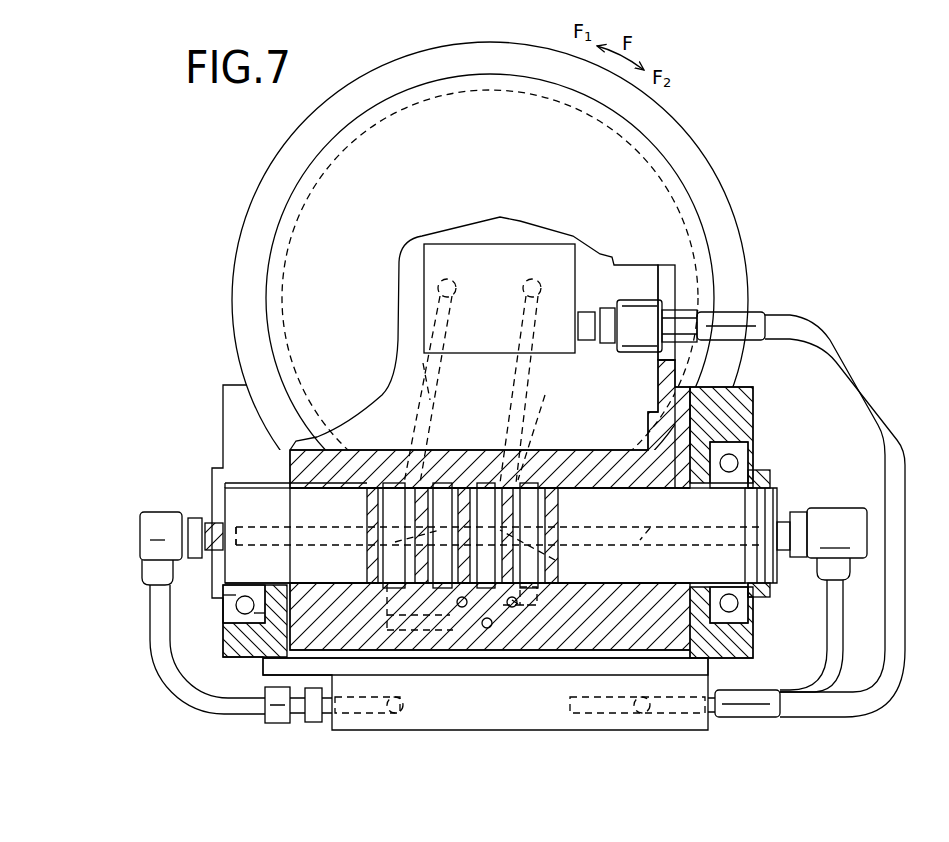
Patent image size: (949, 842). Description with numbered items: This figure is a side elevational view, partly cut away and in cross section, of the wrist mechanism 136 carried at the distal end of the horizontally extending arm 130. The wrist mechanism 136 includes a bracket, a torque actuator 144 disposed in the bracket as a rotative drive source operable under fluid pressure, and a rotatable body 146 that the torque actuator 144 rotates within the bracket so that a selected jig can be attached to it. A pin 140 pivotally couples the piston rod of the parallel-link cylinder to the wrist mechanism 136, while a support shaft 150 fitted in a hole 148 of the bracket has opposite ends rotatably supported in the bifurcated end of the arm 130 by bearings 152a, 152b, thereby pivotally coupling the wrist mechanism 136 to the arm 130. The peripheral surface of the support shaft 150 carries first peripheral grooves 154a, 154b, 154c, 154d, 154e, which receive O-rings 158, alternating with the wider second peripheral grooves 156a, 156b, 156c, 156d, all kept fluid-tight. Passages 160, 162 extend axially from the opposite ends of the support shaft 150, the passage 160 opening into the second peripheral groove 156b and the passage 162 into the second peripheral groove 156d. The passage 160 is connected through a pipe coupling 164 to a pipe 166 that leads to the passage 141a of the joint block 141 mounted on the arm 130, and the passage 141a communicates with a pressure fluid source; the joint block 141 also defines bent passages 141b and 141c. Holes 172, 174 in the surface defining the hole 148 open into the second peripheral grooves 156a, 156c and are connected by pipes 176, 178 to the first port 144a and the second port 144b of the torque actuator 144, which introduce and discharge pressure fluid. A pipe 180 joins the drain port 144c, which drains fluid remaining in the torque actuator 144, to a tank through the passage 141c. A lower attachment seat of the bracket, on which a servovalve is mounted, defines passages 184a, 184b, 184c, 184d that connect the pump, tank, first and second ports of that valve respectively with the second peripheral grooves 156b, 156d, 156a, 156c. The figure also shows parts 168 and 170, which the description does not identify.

The arm 130 is at (262, 670).
The wrist mechanism 136 is at (710, 108).
The pin 140 is at (232, 405).
The joint block 141 is at (340, 724).
The passage 141a is at (367, 713).
The passage 141b is at (650, 715).
The passage 141c is at (647, 716).
The torque actuator 144 is at (668, 187).
The first port 144a is at (444, 266).
The second port 144b is at (528, 266).
The drain port 144c is at (580, 328).
The rotatable body 146 is at (663, 161).
The hole 148 is at (228, 483).
The support shaft 150 is at (235, 522).
The bearing 152a is at (227, 603).
The bearing 152b is at (738, 620).
The first peripheral groove 154a is at (375, 518).
The first peripheral groove 154b is at (420, 587).
The first peripheral groove 154c is at (468, 483).
The first peripheral groove 154d is at (540, 483).
The first peripheral groove 154e is at (621, 516).
The second peripheral groove 156a is at (393, 483).
The second peripheral groove 156b is at (443, 483).
The second peripheral groove 156c is at (488, 483).
The second peripheral groove 156d is at (552, 485).
The O-ring 158 is at (360, 452).
The passage 160 is at (283, 537).
The passage 162 is at (696, 516).
The pipe coupling 164 is at (150, 531).
The pipe 166 is at (153, 632).
The elbow fitting 168 is at (830, 506).
The hose 170 is at (838, 609).
The hole 172 is at (395, 542).
The hole 174 is at (621, 563).
The pipe 176 is at (423, 363).
The pipe 178 is at (545, 395).
The pipe 180 is at (871, 394).
The passage 184a is at (462, 608).
The passage 184b is at (518, 604).
The passage 184c is at (487, 629).
The passage 184d is at (513, 610).